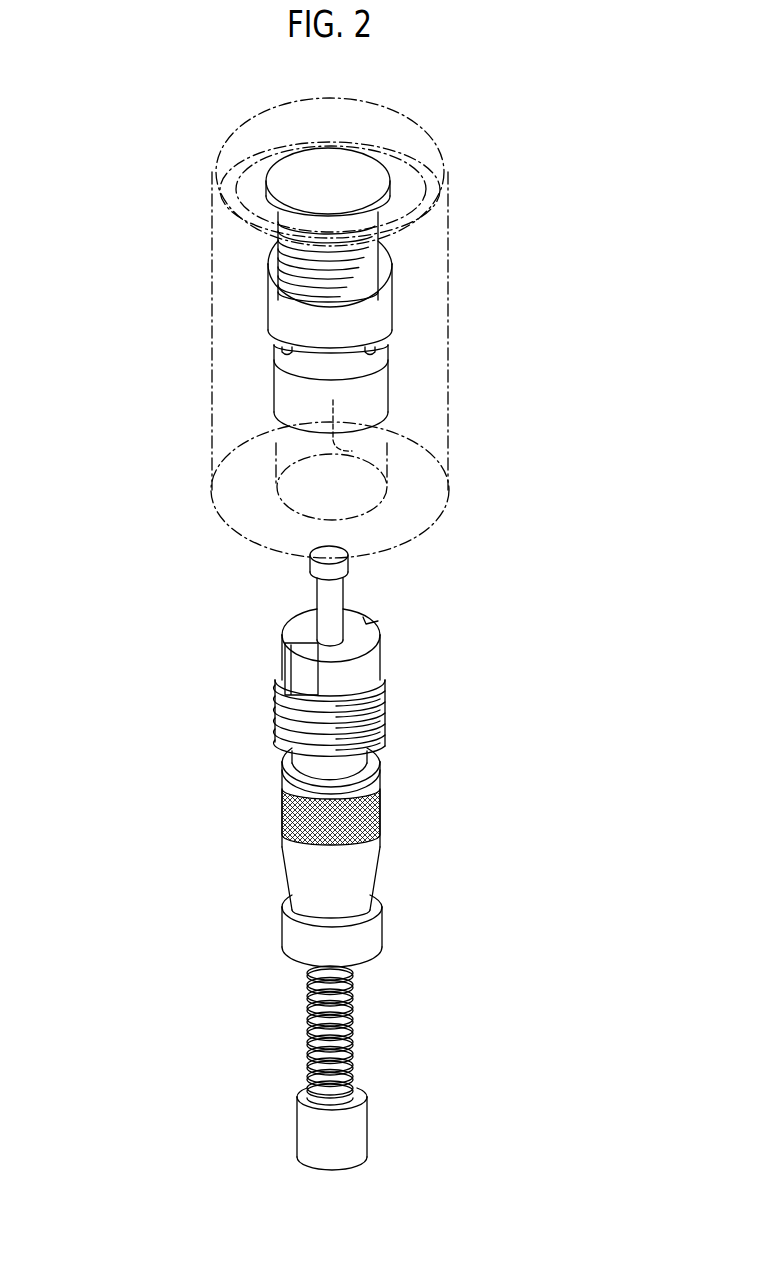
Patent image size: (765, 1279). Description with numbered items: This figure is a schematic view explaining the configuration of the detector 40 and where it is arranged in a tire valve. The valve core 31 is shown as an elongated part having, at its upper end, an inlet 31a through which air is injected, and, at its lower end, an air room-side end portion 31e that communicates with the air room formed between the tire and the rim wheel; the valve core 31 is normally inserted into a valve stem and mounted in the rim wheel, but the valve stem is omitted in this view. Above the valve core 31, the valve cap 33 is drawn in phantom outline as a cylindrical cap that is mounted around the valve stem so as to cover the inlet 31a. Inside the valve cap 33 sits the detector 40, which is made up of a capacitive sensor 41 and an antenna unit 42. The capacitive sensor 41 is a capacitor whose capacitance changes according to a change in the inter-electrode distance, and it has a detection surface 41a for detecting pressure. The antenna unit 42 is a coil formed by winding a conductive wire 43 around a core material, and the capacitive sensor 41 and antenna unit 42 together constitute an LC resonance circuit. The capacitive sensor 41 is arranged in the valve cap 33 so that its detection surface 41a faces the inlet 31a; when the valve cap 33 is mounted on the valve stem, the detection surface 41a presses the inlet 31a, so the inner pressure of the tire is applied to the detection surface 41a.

The valve core 31 is at (391, 874).
The inlet 31a is at (369, 573).
The air room-side end portion 31e is at (384, 1143).
The valve cap 33 is at (430, 265).
The detector 40 is at (103, 282).
The capacitive sensor 41 is at (312, 390).
The detection surface 41a is at (352, 451).
The antenna unit 42 is at (249, 251).
The conductive wire 43 is at (268, 274).